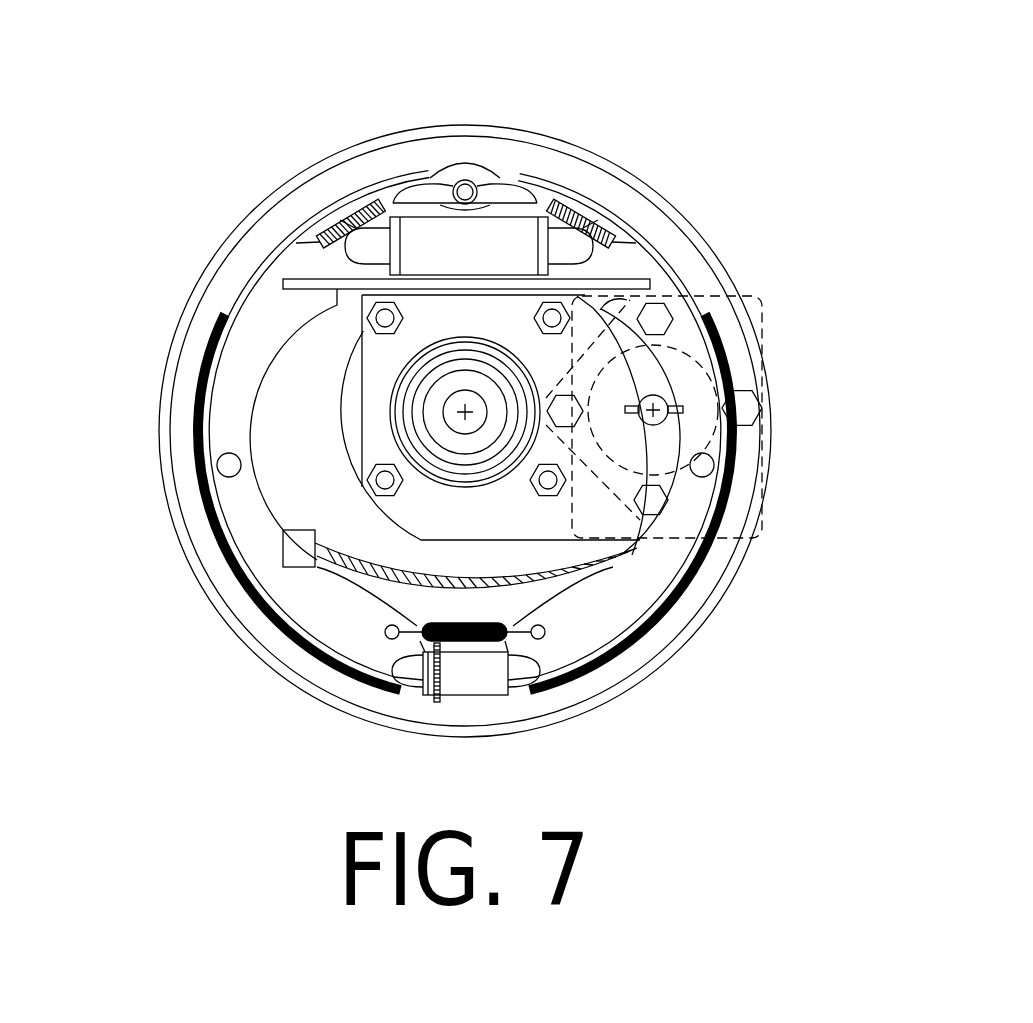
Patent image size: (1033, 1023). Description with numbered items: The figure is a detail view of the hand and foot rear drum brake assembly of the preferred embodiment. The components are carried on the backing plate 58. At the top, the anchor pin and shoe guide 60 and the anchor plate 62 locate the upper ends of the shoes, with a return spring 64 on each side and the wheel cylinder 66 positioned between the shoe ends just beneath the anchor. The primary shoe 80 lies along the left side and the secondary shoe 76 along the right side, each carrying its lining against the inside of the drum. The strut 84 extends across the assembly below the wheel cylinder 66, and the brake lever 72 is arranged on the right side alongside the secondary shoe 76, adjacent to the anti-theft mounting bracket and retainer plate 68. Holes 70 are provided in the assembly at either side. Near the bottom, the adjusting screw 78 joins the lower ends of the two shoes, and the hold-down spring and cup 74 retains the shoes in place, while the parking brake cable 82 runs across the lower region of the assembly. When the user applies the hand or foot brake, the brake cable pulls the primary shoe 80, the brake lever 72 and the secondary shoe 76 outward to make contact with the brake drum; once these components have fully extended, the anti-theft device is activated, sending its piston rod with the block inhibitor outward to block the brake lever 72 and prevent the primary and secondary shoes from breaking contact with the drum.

The backing plate 58 is at (451, 125).
The anchor pin and shoe guide 60 is at (468, 182).
The anchor plate 62 is at (482, 192).
The return spring 64 is at (340, 212).
The wheel cylinder 66 is at (497, 237).
The anti-theft mounting bracket and retainer plate 68 is at (690, 372).
The holes 70 is at (224, 463).
The brake lever 72 is at (670, 476).
The hold-down spring and cup 74 is at (480, 622).
The secondary shoe 76 is at (563, 630).
The adjusting screw 78 is at (497, 680).
The primary shoe 80 is at (362, 650).
The parking brake cable 82 is at (317, 560).
The strut 84 is at (307, 290).